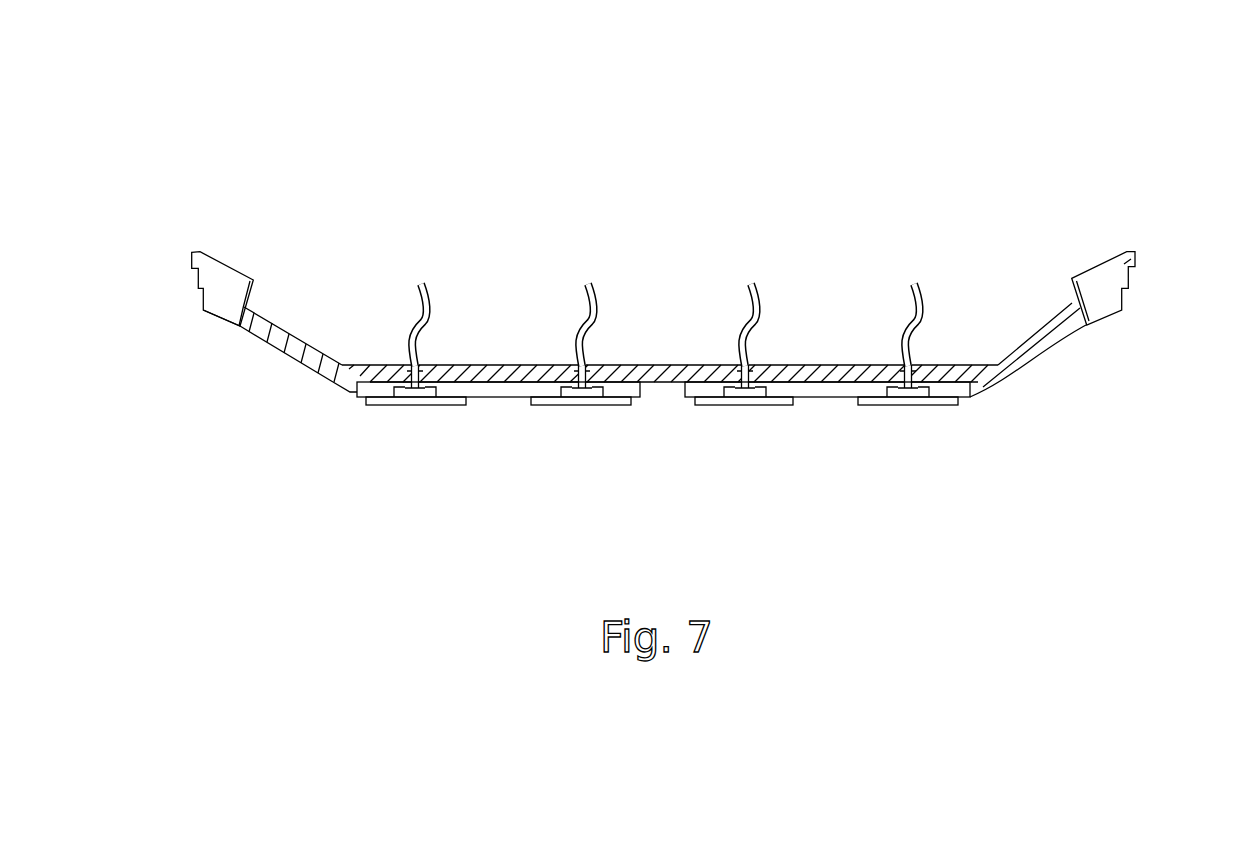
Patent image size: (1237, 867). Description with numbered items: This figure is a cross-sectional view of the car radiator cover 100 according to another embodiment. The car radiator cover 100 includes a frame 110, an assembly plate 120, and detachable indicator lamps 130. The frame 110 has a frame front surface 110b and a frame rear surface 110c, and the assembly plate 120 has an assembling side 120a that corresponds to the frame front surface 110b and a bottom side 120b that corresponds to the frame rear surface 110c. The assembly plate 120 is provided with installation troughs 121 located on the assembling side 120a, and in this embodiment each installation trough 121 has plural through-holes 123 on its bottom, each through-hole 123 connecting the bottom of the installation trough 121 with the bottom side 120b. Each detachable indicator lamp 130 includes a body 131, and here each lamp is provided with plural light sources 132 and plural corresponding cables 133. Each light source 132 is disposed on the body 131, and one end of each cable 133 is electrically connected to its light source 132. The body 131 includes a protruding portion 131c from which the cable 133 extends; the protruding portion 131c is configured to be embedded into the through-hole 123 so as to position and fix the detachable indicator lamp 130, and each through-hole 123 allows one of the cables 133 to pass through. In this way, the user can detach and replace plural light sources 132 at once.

The car radiator cover 100 is at (992, 122).
The frame 110 is at (1135, 252).
The frame front surface 110b is at (212, 330).
The frame rear surface 110c is at (212, 220).
The assembly plate 120 is at (1045, 362).
The assembling side 120a is at (268, 368).
The bottom side 120b is at (338, 355).
The installation trough 121 is at (346, 400).
The through-hole 123 is at (600, 367).
The detachable indicator lamp 130 is at (491, 430).
The body 131 is at (522, 388).
The protruding portion 131c is at (411, 370).
The light source 132 is at (456, 406).
The cable 133 is at (432, 313).